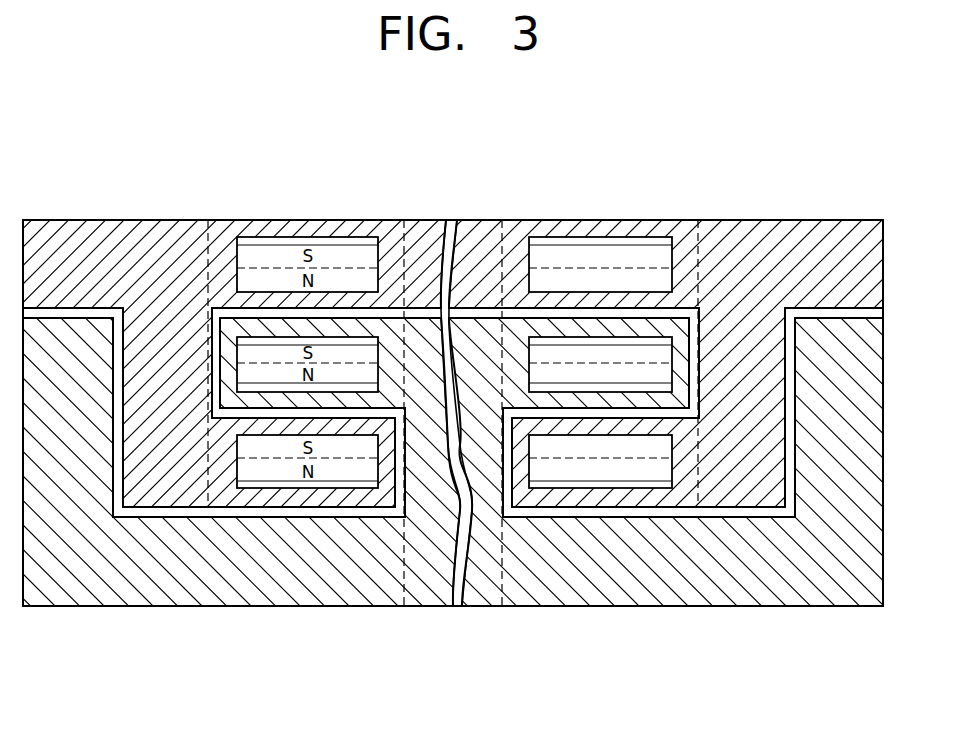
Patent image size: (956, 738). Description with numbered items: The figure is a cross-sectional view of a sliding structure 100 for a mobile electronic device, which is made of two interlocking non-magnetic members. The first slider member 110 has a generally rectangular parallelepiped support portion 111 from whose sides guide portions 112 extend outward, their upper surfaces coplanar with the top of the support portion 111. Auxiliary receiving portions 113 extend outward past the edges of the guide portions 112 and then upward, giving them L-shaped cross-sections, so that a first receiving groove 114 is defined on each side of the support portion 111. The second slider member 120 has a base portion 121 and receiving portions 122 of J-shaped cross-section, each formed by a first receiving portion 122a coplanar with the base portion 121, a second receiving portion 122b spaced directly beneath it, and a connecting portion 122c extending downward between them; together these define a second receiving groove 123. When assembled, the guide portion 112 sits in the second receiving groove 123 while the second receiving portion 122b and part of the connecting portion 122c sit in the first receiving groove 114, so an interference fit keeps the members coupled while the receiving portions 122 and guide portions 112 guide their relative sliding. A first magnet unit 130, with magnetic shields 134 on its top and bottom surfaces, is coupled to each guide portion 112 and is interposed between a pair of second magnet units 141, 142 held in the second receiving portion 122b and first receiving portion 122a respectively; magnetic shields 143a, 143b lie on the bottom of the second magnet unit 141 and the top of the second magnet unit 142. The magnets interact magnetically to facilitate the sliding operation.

The sliding structure 100 is at (765, 88).
The first slider member 110 is at (191, 607).
The support portion 111 is at (486, 596).
The guide portion 112 is at (518, 347).
The auxiliary receiving portion 113 is at (829, 582).
The first receiving groove 114 is at (398, 466).
The second slider member 120 is at (128, 203).
The base portion 121 is at (481, 243).
The receiving portion 122 is at (313, 220).
The first receiving portion 122a is at (682, 250).
The second receiving portion 122b is at (685, 477).
The connecting portion 122c is at (742, 470).
The second receiving groove 123 is at (222, 350).
The first magnet unit 130 is at (558, 370).
The magnetic shield 134 is at (700, 337).
The second magnet unit 141 is at (640, 472).
The second magnet unit 142 is at (645, 258).
The magnetic shield 143a is at (625, 487).
The magnetic shield 143b is at (634, 240).